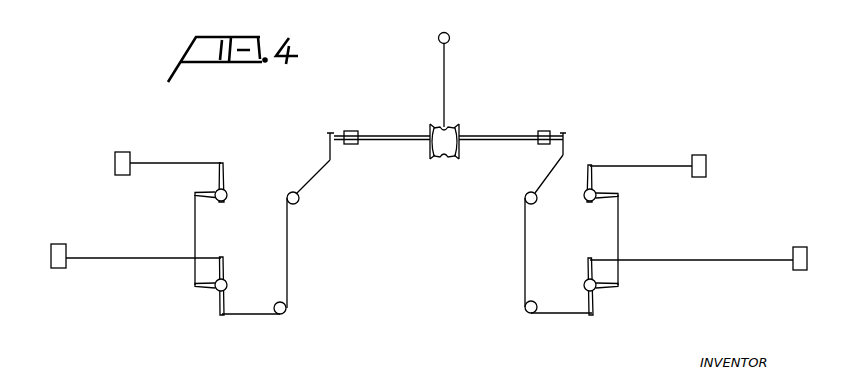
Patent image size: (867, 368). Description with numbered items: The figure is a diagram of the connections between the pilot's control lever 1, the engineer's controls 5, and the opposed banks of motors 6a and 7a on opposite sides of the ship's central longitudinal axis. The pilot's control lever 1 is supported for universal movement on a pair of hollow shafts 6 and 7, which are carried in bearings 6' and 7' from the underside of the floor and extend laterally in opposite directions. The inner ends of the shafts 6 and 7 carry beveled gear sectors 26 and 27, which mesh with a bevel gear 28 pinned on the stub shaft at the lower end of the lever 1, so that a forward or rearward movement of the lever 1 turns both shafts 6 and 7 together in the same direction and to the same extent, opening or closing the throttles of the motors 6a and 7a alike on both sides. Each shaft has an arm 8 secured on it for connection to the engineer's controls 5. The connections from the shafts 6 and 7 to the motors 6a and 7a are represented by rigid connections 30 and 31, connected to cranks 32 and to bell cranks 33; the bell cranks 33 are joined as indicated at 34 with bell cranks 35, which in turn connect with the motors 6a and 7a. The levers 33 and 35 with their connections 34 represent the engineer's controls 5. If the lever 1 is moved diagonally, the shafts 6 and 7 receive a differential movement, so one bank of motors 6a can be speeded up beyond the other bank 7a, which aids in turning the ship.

The pilot's control lever 1 is at (447, 72).
The beveled gear sector 26 is at (431, 127).
The beveled gear sector 27 is at (458, 127).
The bevel gear 28 is at (441, 159).
The shaft 6 is at (382, 166).
The shaft 7 is at (511, 164).
The bearing 6' is at (356, 118).
The bearing 7' is at (561, 116).
The arm 8 is at (328, 150).
The crank 32 is at (299, 205).
The rigid connection 30 is at (289, 268).
The rigid connection 31 is at (527, 255).
The engineer's control 5 is at (244, 192).
The bell crank 35 is at (226, 175).
The connection 34 is at (197, 236).
The bell crank 33 is at (221, 311).
The motor 6a is at (125, 152).
The motor 7a is at (703, 155).